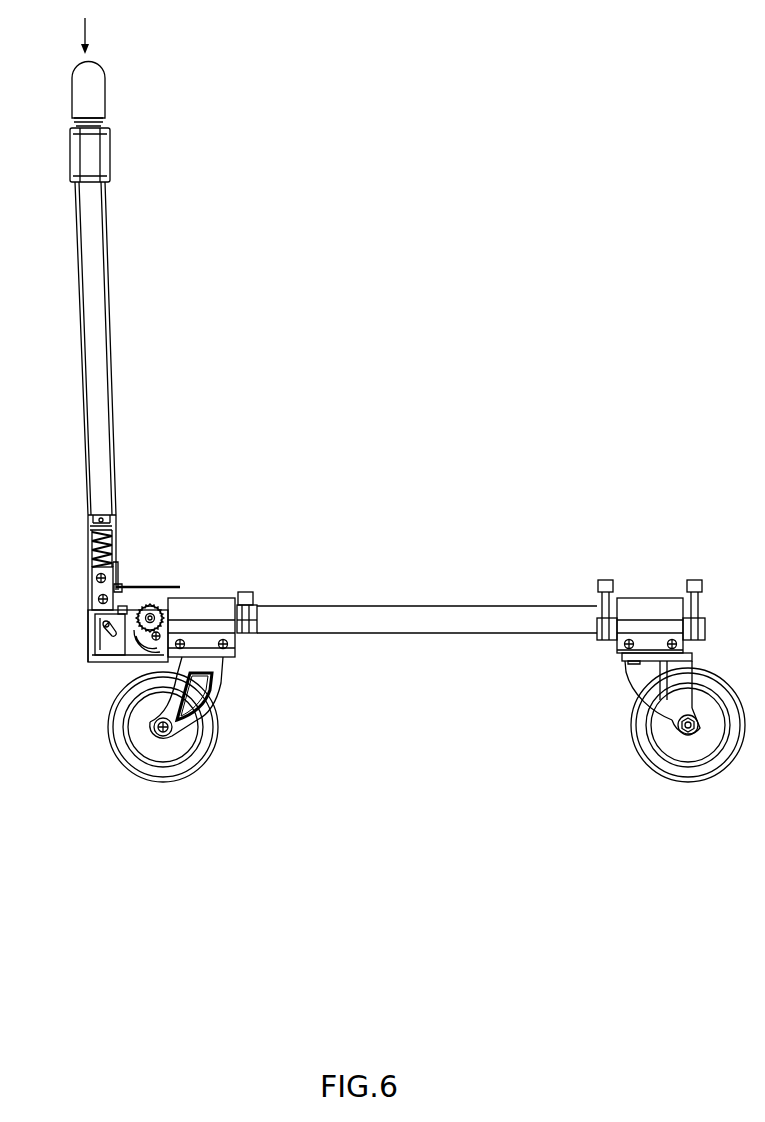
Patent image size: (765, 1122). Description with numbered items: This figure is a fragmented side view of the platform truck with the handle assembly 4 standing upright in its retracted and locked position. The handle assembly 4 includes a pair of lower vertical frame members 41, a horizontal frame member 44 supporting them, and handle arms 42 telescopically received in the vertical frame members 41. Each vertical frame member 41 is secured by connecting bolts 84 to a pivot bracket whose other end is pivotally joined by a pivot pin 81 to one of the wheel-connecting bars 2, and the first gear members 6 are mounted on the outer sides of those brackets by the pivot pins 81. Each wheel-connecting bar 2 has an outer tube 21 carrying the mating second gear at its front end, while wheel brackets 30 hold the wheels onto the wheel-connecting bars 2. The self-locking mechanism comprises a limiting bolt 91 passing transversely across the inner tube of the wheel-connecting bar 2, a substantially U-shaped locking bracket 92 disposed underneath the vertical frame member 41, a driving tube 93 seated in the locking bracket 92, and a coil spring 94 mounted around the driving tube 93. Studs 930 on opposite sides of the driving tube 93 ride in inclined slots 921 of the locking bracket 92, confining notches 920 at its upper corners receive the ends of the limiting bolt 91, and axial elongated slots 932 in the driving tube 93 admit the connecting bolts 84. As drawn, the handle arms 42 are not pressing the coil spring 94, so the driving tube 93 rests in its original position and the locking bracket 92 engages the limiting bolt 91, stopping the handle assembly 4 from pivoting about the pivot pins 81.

The wheel-connecting bars 2 is at (432, 582).
The outer tube 21 is at (472, 634).
The wheel brackets 30 is at (640, 605).
The handle assembly 4 is at (140, 374).
The vertical frame members 41 is at (110, 326).
The handle arms 42 is at (93, 278).
The horizontal frame member 44 is at (110, 152).
The first gear members 6 is at (140, 624).
The pivot pins 81 is at (158, 620).
The connecting bolts 84 is at (97, 578).
The limiting bolt 91 is at (120, 614).
The locking bracket 92 is at (110, 665).
The confining notches 920 is at (118, 609).
The inclined slots 921 is at (105, 648).
The driving tube 93 is at (92, 548).
The studs 930 is at (100, 624).
The axial elongated slots 932 is at (100, 520).
The coil spring 94 is at (92, 530).